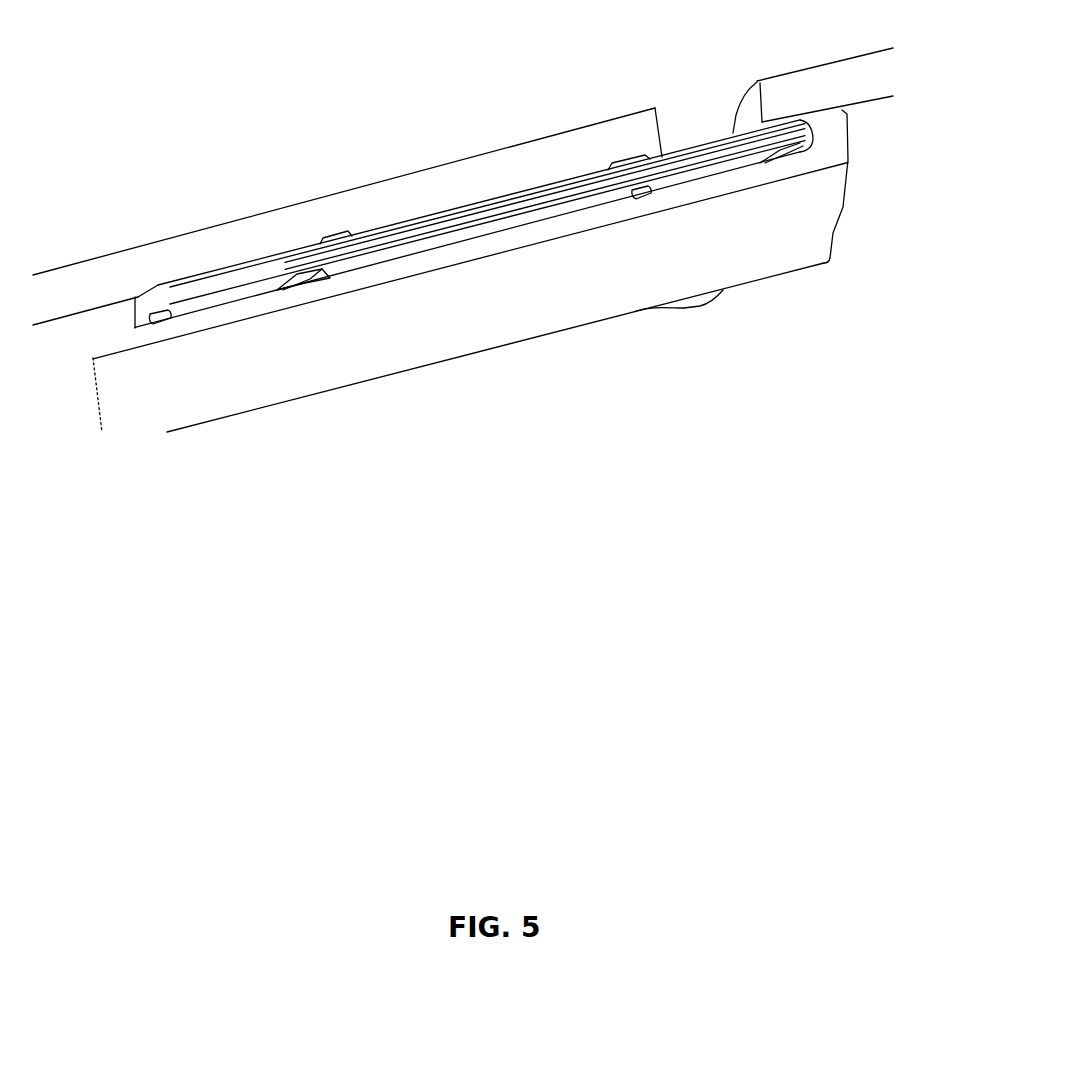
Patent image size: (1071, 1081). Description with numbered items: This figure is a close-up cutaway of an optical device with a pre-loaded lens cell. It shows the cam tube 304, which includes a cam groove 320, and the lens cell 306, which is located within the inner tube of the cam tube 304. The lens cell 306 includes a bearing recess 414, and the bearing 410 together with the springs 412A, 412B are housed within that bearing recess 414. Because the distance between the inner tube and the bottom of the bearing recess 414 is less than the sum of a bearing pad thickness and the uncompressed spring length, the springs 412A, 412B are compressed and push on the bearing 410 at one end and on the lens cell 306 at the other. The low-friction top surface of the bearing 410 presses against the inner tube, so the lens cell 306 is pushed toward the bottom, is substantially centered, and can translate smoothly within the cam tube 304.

The cam tube 304 is at (433, 157).
The cam groove 320 is at (702, 97).
The lens cell 306 is at (639, 323).
The bearing 410 is at (228, 252).
The bearing recess 414 is at (537, 236).
The spring 412A is at (166, 330).
The spring 412B is at (633, 209).